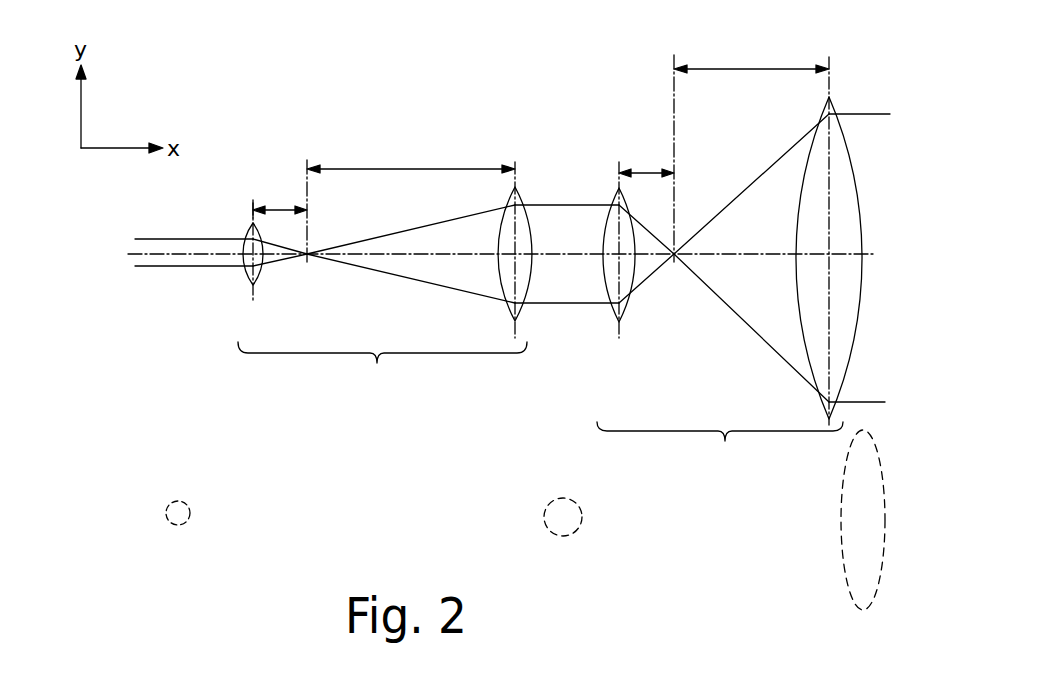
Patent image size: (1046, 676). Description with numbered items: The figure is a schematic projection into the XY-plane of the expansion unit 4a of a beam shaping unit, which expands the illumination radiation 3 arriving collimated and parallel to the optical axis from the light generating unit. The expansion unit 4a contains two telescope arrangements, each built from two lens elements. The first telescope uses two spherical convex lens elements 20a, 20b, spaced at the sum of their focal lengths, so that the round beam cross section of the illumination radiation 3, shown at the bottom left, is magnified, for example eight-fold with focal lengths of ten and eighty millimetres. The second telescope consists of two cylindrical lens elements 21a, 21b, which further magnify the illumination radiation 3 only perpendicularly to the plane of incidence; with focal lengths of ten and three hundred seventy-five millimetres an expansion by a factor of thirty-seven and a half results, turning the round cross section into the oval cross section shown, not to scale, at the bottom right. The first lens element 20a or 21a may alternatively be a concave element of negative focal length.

The illumination radiation 3 is at (160, 238).
The expansion unit 4a is at (256, 140).
The first spherical lens element 20a is at (247, 258).
The second spherical lens element 20b is at (523, 220).
The first cylindrical lens element 21a is at (612, 217).
The second cylindrical lens element 21b is at (838, 140).